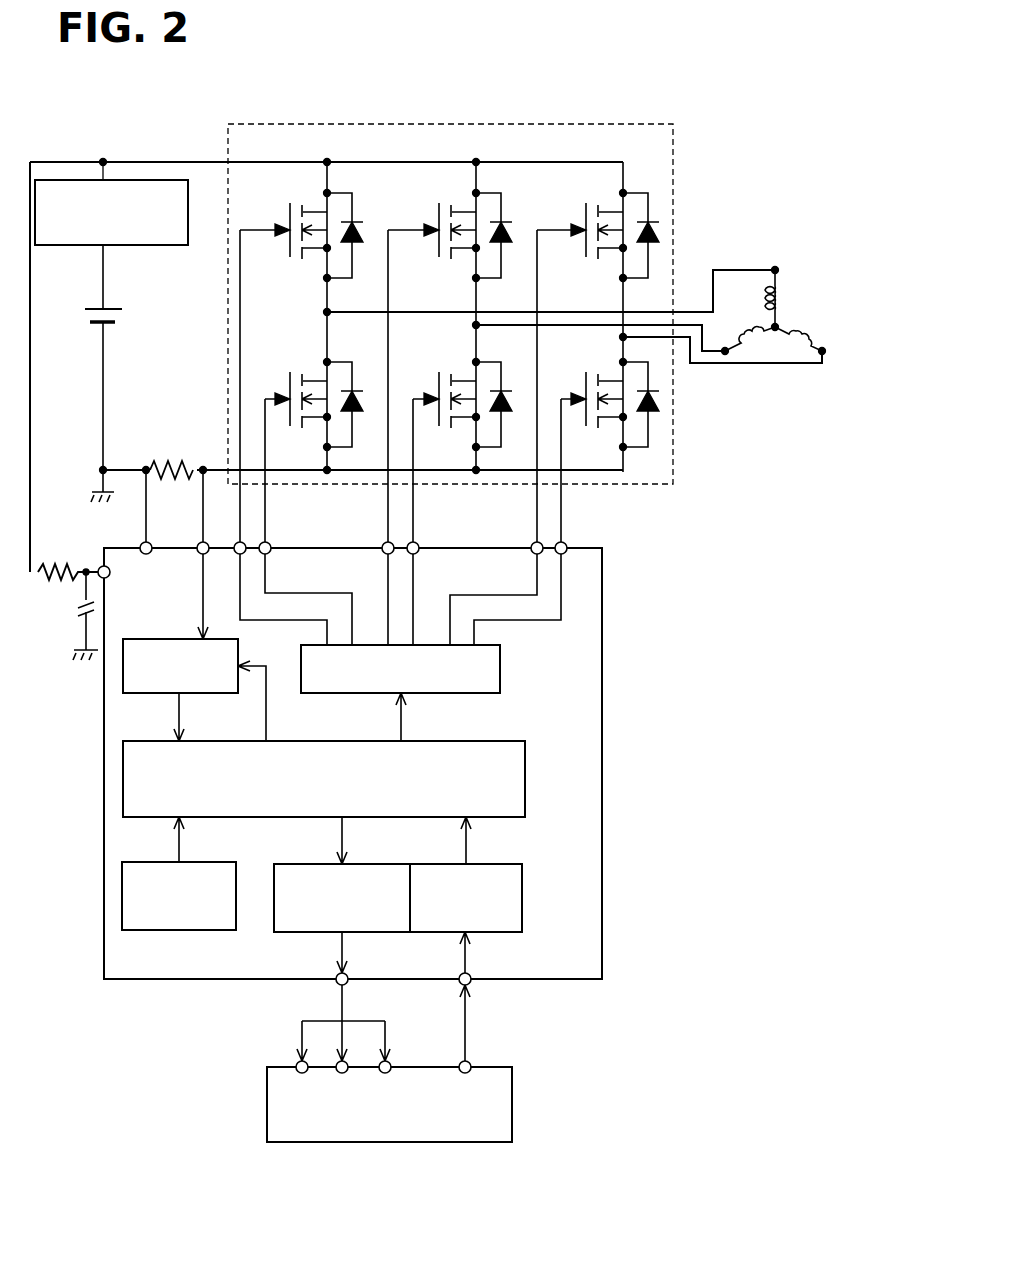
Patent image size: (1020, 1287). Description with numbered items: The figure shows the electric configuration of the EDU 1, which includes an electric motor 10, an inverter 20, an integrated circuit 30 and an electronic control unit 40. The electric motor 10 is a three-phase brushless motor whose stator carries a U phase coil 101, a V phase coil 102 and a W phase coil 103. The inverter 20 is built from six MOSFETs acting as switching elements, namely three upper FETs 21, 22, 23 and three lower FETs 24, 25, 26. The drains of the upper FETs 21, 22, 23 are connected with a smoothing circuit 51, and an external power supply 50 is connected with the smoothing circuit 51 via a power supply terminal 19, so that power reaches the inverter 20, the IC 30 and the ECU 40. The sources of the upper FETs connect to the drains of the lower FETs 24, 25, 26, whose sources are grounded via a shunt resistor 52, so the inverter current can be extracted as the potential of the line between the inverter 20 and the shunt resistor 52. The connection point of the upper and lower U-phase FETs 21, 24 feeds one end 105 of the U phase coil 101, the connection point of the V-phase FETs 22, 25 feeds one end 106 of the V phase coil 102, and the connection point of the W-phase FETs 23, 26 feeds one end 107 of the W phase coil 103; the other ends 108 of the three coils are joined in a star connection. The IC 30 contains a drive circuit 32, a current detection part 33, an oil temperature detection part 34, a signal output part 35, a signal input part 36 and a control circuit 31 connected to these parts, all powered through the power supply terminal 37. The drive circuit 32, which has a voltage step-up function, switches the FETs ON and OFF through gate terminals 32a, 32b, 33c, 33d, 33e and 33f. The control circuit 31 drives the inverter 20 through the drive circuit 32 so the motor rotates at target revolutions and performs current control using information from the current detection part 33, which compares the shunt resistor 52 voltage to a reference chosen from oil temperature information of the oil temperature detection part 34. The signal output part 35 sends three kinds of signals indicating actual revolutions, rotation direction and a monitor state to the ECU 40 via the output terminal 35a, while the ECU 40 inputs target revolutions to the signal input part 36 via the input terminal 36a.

The EDU 1 is at (654, 552).
The electric motor 10 is at (780, 320).
The power supply terminal 19 is at (103, 278).
The inverter 20 is at (438, 124).
The FET (Su+) 21 is at (354, 200).
The FET (Sv+) 22 is at (503, 200).
The FET (Sw+) 23 is at (650, 208).
The FET (Su−) 24 is at (352, 364).
The FET (Sv−) 25 is at (503, 366).
The FET (Sw−) 26 is at (650, 435).
The integrated circuit (IC) 30 is at (602, 730).
The control circuit 31 is at (525, 778).
The drive circuit 32 is at (500, 668).
The terminal 32a is at (238, 541).
The terminal 32b is at (268, 541).
The current detection part 33 is at (218, 693).
The drive terminal 33c is at (385, 541).
The drive terminal 33d is at (416, 541).
The drive terminal 33e is at (534, 541).
The drive terminal 33f is at (564, 541).
The oil temperature detection part 34 is at (216, 930).
The signal output part 35 is at (290, 932).
The output terminal 35a is at (348, 981).
The signal input part 36 is at (506, 932).
The input terminal 36a is at (471, 983).
The power supply terminal 37 is at (110, 572).
The electronic control unit (ECU) 40 is at (512, 1105).
The external power supply 50 is at (110, 308).
The smoothing circuit 51 is at (190, 195).
The shunt resistor 52 is at (178, 458).
The U phase coil 101 is at (781, 297).
The V phase coil 102 is at (743, 355).
The W phase coil 103 is at (800, 360).
The one end of the U phase coil 105 is at (778, 268).
The one end of the V phase coil 106 is at (724, 356).
The one end of the W phase coil 107 is at (826, 352).
The other ends of the coils 108 is at (771, 332).